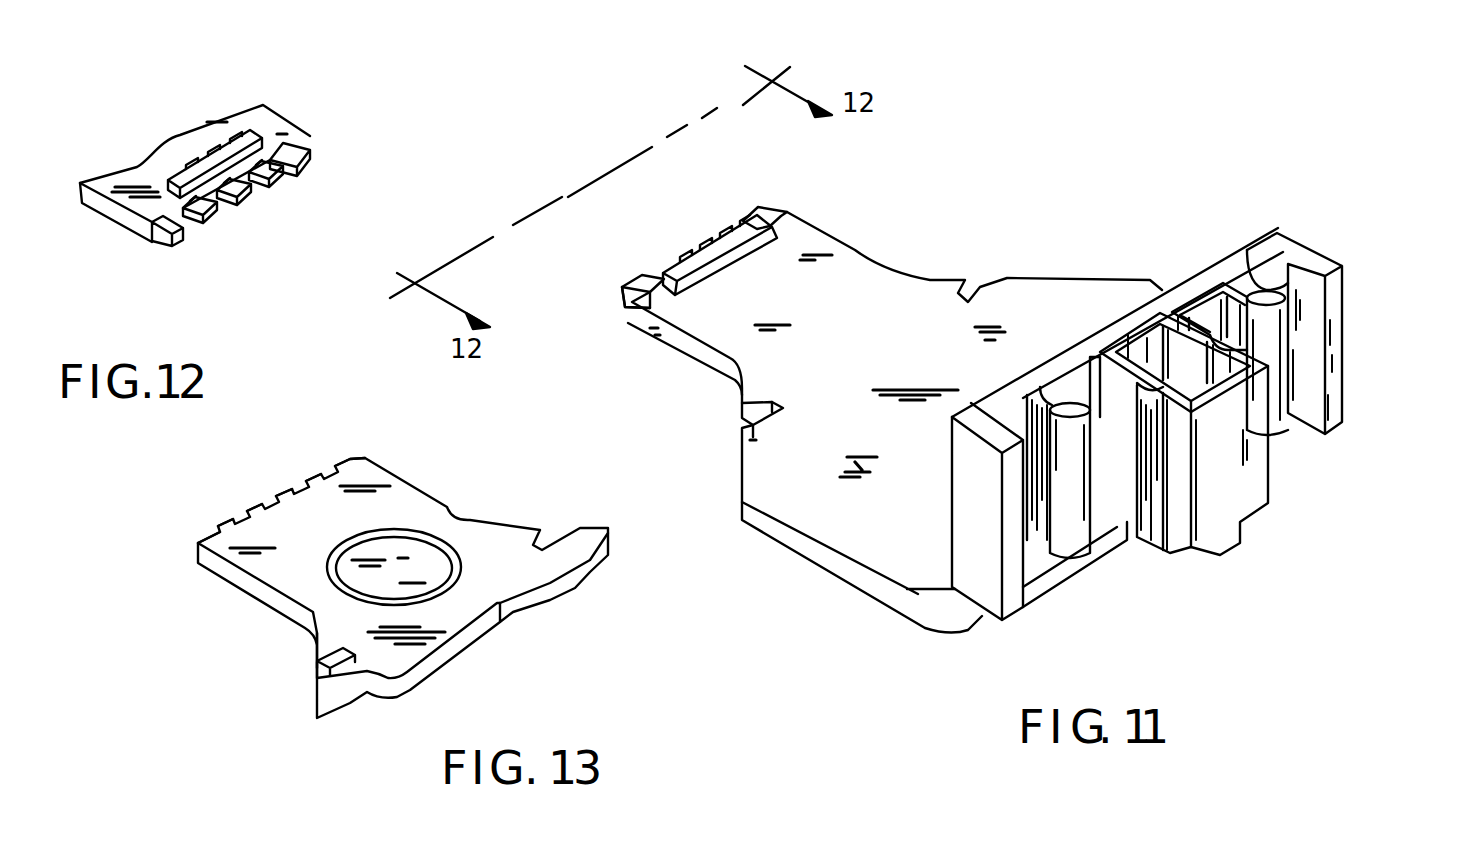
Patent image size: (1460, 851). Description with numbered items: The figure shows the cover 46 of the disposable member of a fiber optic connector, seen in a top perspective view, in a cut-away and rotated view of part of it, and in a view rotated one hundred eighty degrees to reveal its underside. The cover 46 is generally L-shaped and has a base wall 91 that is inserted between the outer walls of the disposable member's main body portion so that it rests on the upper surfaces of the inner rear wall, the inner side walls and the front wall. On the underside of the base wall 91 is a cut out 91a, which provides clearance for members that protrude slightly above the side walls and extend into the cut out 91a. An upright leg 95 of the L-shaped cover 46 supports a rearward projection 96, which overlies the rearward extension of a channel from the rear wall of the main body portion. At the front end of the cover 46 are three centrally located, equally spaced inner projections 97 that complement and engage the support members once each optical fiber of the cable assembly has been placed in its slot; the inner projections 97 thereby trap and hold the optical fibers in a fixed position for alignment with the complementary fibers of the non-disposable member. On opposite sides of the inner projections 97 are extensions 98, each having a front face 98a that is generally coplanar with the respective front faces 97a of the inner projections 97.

In FIG. 11, the cover 46 is at (1163, 278).
In FIG. 13, the base wall 91 is at (527, 573).
In FIG. 11, the base wall 91 is at (848, 285).
In FIG. 13, the cut out 91a is at (405, 577).
In FIG. 11, the upright leg 95 is at (1345, 380).
In FIG. 11, the rearward projection 96 is at (1237, 497).
In FIG. 12, the inner projections 97 is at (222, 182).
In FIG. 13, the inner projections 97 is at (303, 480).
In FIG. 11, the inner projections 97 is at (668, 273).
In FIG. 12, the front faces 97a is at (298, 175).
In FIG. 12, the extensions 98 is at (304, 142).
In FIG. 13, the extensions 98 is at (353, 464).
In FIG. 11, the extensions 98 is at (632, 283).
In FIG. 12, the front face 98a is at (313, 155).
In FIG. 11, the front face 98a is at (620, 298).